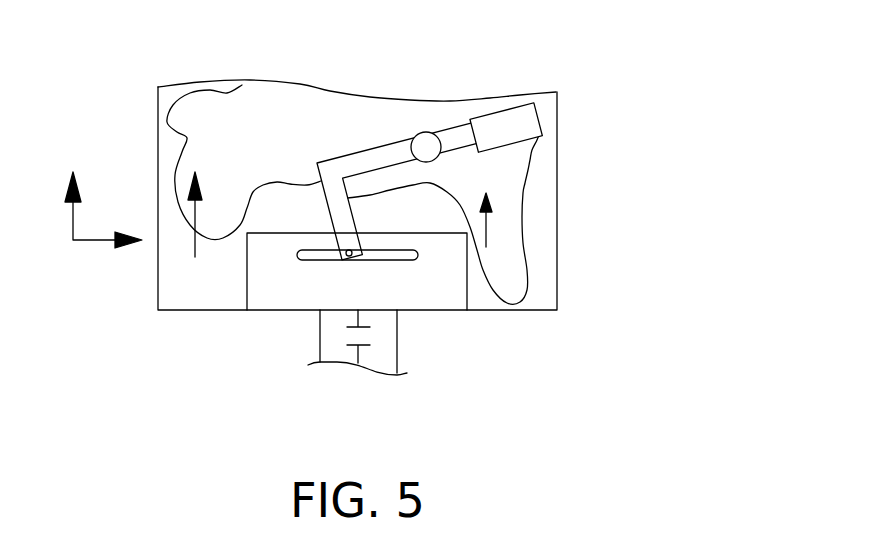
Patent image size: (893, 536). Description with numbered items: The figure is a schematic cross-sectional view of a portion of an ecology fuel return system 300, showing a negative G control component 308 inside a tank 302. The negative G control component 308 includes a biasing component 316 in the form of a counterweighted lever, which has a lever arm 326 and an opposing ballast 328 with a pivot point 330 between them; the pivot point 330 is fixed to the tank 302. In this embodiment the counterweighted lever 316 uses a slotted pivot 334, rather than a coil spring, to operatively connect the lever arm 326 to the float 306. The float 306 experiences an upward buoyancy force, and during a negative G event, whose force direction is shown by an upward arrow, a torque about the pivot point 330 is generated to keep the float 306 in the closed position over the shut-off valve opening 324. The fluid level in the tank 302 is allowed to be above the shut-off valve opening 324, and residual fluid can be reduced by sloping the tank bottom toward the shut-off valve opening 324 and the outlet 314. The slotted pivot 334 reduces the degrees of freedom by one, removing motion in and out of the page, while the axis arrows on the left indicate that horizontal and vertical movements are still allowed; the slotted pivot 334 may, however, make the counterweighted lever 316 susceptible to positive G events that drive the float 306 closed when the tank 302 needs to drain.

The ecology fuel return system 300 is at (588, 162).
The tank 302 is at (558, 197).
The float 306 is at (378, 300).
The negative G control component 308 is at (534, 253).
The outlet 314 is at (397, 373).
The biasing component 316 is at (451, 99).
The shut-off valve opening 324 is at (315, 310).
The lever arm 326 is at (345, 153).
The ballast 328 is at (527, 127).
The pivot point 330 is at (422, 132).
The slotted pivot 334 is at (368, 243).